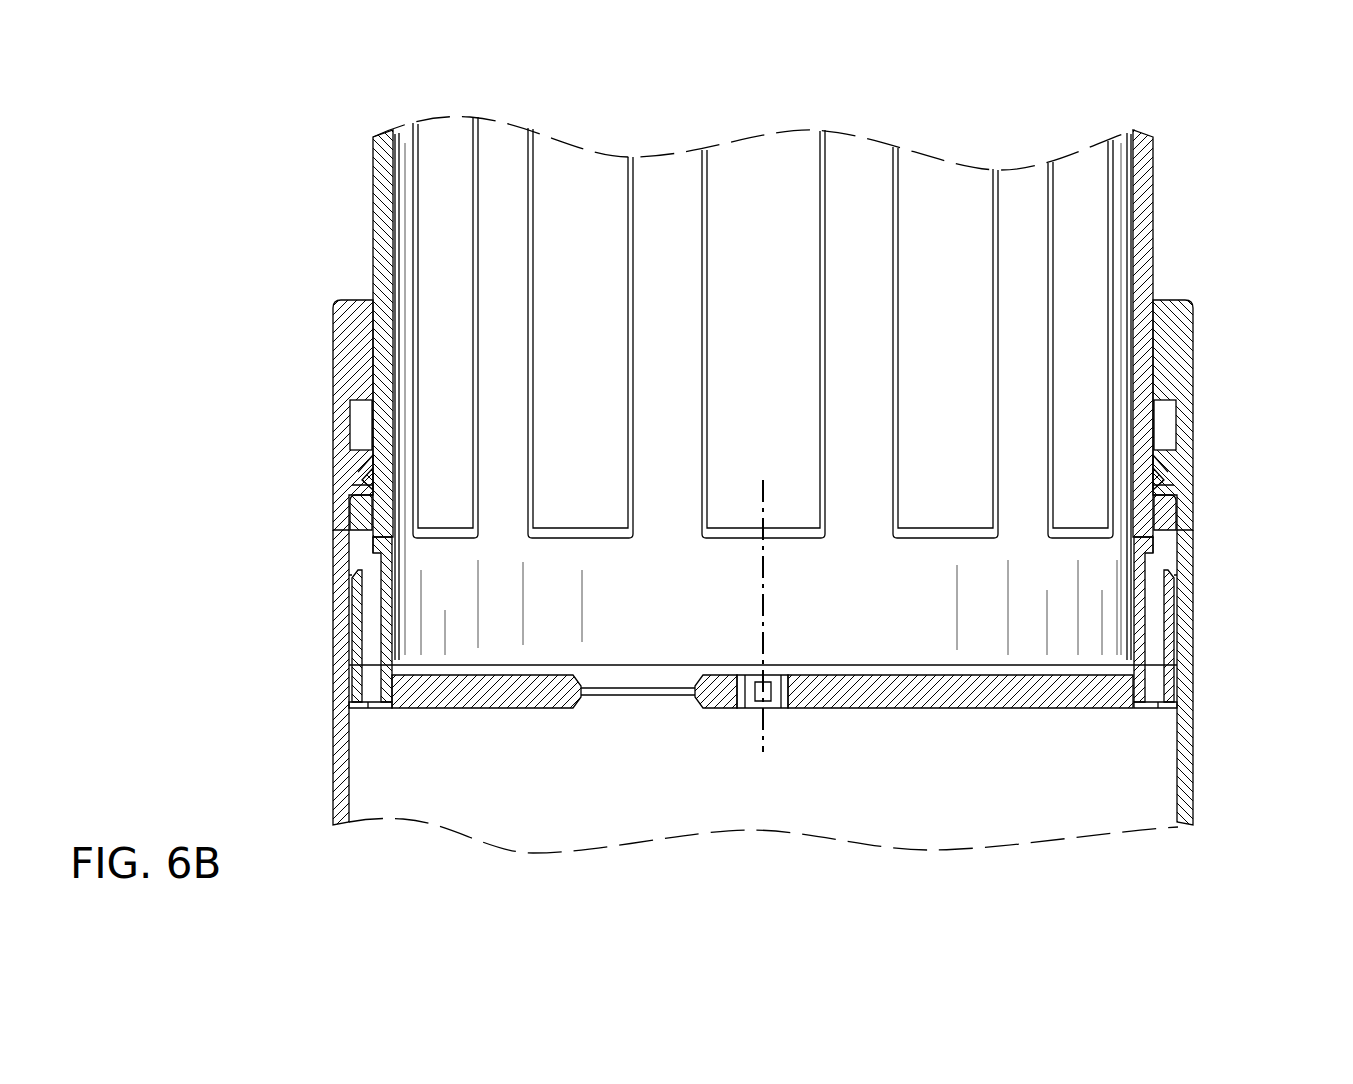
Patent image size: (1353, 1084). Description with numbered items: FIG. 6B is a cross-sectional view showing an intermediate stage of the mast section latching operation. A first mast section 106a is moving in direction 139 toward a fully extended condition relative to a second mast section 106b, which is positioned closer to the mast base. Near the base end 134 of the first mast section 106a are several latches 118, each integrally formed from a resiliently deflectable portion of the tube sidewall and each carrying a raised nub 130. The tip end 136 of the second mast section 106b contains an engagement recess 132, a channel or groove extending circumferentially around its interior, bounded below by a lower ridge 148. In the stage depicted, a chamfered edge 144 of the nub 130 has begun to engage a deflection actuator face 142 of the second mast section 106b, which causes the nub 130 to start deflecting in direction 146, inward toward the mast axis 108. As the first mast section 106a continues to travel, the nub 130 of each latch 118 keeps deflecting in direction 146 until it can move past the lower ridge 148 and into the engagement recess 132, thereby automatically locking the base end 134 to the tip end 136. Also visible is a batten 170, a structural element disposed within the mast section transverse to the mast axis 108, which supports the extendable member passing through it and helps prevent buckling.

The first mast section 106a is at (1180, 250).
The second mast section 106b is at (1232, 743).
The mast axis 108 is at (768, 593).
The latch 118 is at (460, 372).
The raised nub 130 is at (356, 510).
The engagement recess 132 is at (350, 415).
The base end 134 is at (1178, 658).
The tip end 136 is at (1178, 352).
The direction 139 is at (763, 172).
The deflection actuator face 142 is at (362, 480).
The chamfered edge 144 is at (378, 512).
The direction 146 is at (385, 503).
The lower ridge 148 is at (367, 462).
The batten 170 is at (1015, 690).